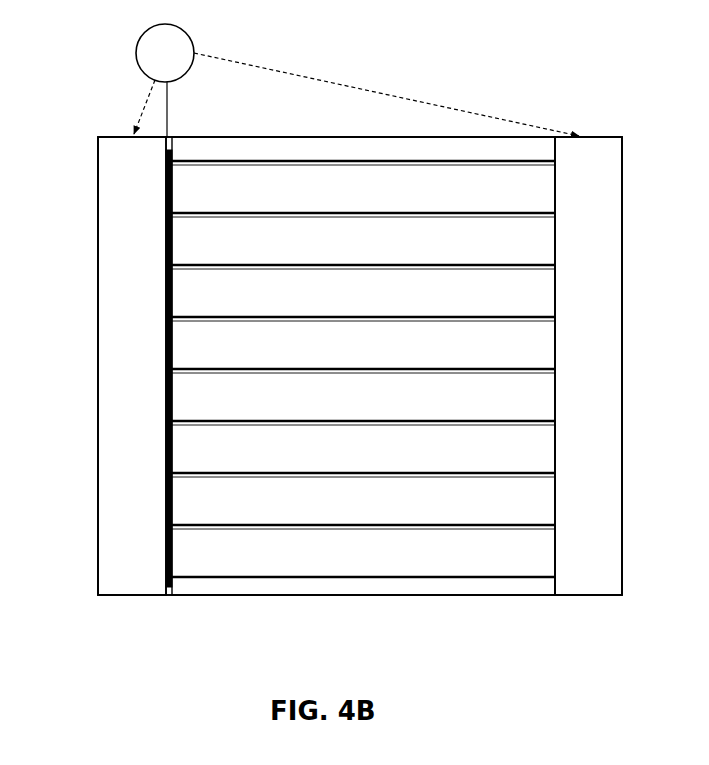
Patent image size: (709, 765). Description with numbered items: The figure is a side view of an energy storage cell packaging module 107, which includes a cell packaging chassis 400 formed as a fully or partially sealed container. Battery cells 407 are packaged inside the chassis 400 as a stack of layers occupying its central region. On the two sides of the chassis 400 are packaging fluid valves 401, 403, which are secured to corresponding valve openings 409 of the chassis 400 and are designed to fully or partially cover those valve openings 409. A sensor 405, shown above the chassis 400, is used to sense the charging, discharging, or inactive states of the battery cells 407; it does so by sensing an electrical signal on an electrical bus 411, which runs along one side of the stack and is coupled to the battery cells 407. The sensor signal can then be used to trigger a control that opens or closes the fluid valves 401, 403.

The energy storage cell packaging module 107 is at (641, 177).
The cell packaging chassis 400 is at (470, 600).
The packaging fluid valve 401 is at (143, 354).
The packaging fluid valve 403 is at (587, 376).
The sensor 405 is at (137, 38).
The battery cells 407 is at (372, 412).
The valve openings 409 is at (165, 598).
The electrical bus 411 is at (165, 551).